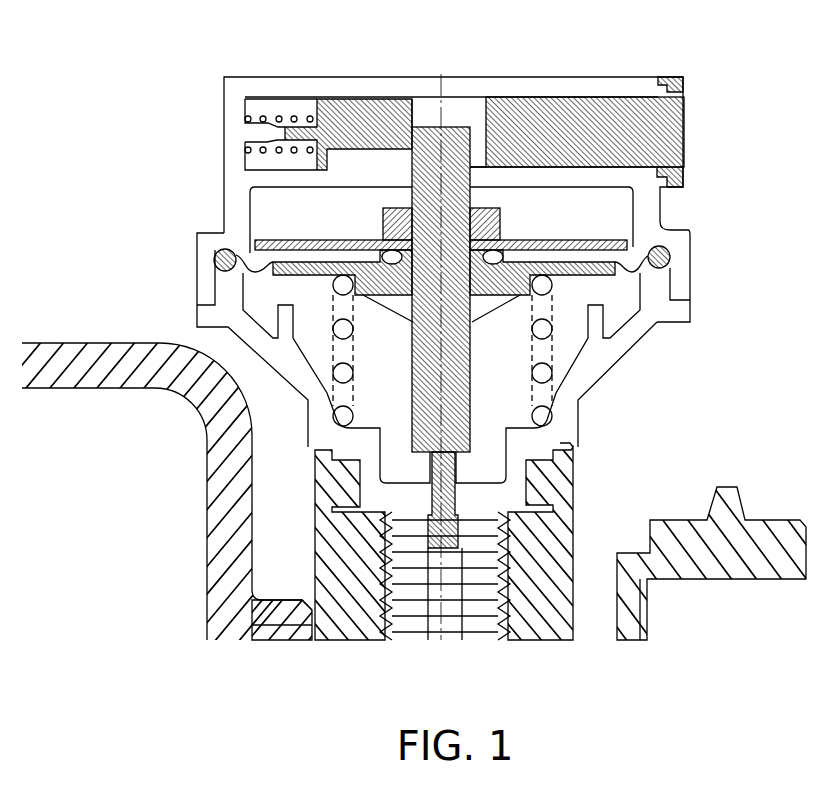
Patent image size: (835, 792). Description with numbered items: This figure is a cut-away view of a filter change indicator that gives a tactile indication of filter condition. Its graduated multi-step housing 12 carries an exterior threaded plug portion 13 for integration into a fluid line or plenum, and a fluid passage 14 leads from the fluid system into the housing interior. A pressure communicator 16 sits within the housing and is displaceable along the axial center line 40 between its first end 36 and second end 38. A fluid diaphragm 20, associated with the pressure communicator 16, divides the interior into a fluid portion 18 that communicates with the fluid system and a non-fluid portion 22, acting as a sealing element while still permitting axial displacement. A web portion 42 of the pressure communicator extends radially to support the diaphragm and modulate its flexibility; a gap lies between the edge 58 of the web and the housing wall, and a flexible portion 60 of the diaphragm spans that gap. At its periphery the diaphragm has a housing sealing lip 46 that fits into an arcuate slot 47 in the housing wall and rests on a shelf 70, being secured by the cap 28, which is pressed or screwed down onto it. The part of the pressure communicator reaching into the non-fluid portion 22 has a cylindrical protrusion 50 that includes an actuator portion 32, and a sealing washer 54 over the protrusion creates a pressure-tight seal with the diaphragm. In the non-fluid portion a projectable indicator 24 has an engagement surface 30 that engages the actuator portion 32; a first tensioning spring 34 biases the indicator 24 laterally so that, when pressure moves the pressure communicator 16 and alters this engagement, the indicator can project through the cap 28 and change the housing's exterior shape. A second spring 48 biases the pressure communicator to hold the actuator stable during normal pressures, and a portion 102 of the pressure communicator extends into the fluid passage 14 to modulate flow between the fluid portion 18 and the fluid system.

The housing 12 is at (195, 317).
The threaded plug portion 13 is at (505, 570).
The fluid passage 14 is at (385, 567).
The pressure communicator 16 is at (458, 340).
The fluid portion 18 is at (328, 347).
The fluid diaphragm 20 is at (255, 240).
The non-fluid portion 22 is at (607, 220).
The projectable indicator 24 is at (577, 110).
The cap 28 is at (197, 246).
The engagement surface 30 is at (413, 107).
The actuator portion 32 is at (455, 127).
The first tensioning spring 34 is at (280, 116).
The first end 36 is at (441, 125).
The second end 38 is at (463, 546).
The axial center line 40 is at (456, 430).
The web portion 42 is at (597, 273).
The housing sealing lip 46 is at (670, 255).
The arcuate slot 47 is at (672, 278).
The second spring 48 is at (545, 328).
The cylindrical protrusion 50 is at (410, 212).
The sealing washer 54 is at (383, 217).
The edge of the web portion 58 is at (243, 279).
The flexible portion 60 is at (684, 322).
The shelf 70 is at (243, 283).
The portion of the pressure communicator 102 is at (430, 522).